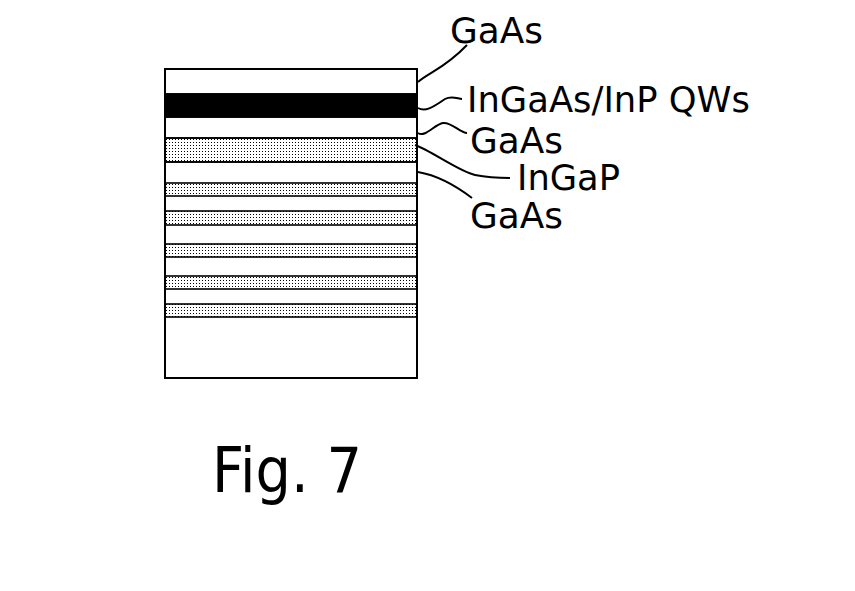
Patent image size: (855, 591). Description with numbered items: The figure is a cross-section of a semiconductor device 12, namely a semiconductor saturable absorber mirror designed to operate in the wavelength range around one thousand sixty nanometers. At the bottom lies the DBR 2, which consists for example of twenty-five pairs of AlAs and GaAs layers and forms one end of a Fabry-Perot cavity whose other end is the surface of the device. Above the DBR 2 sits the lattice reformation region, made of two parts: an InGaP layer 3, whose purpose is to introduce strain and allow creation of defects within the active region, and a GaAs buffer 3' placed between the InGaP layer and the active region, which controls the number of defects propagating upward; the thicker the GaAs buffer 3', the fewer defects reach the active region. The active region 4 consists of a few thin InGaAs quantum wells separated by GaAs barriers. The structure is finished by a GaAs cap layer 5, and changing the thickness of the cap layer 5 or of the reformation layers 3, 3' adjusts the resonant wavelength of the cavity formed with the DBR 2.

The semiconductor device 12 is at (113, 335).
The cap layer 5 is at (165, 72).
The active region 4 is at (165, 98).
The GaAs buffer 3' is at (253, 130).
The InGaP layer 3 is at (235, 154).
The DBR 2 is at (165, 235).